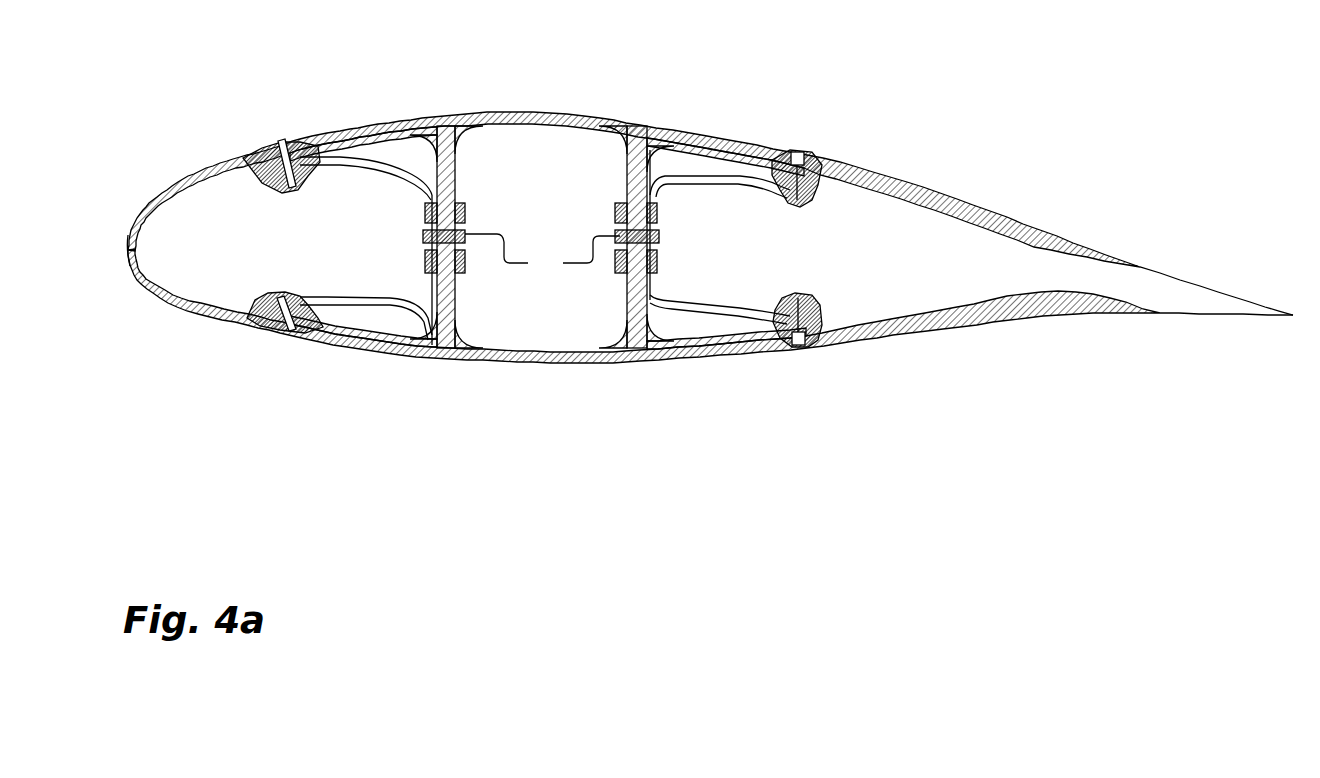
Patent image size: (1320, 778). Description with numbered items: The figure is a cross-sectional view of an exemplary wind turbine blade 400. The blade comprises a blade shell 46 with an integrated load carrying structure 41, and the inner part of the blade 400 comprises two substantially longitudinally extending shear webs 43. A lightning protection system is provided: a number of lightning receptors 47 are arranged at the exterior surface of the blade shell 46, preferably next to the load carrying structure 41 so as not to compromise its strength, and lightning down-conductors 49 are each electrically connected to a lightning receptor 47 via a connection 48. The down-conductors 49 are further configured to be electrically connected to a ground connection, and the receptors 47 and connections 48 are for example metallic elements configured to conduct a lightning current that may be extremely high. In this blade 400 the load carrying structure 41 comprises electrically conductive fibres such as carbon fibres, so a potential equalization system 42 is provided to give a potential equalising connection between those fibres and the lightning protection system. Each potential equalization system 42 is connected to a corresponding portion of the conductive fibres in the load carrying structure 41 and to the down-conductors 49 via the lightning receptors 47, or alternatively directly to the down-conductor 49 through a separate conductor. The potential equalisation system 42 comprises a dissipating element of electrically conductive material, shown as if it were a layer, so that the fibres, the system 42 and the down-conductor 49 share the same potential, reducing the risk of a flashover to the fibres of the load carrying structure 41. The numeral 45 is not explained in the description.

The wind turbine blade 400 is at (1080, 240).
The load carrying structure 41 is at (525, 112).
The potential equalization system 42 is at (383, 123).
The shear web 43 is at (440, 362).
The connecting clip 45 is at (300, 140).
The blade shell 46 is at (130, 268).
The lightning receptor 47 is at (283, 140).
The connection 48 is at (390, 173).
The lightning down-conductor 49 is at (542, 256).